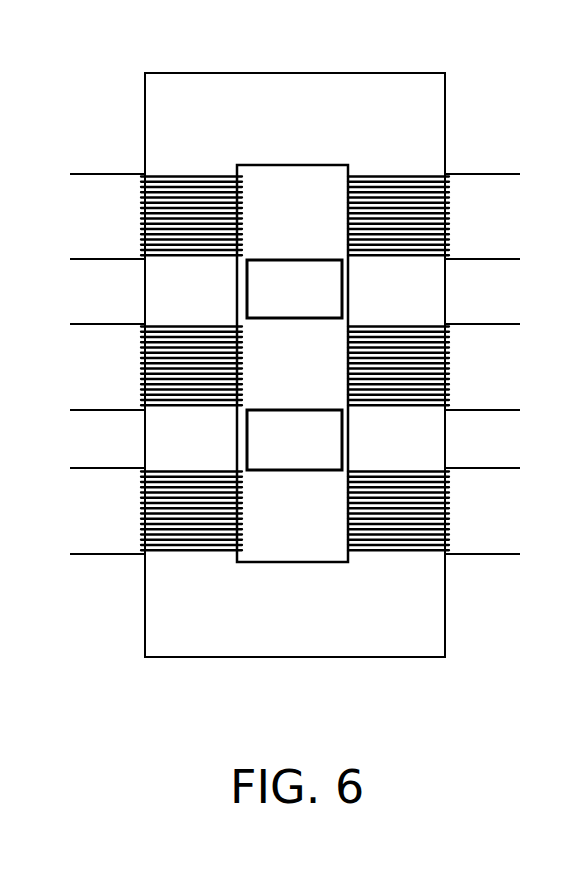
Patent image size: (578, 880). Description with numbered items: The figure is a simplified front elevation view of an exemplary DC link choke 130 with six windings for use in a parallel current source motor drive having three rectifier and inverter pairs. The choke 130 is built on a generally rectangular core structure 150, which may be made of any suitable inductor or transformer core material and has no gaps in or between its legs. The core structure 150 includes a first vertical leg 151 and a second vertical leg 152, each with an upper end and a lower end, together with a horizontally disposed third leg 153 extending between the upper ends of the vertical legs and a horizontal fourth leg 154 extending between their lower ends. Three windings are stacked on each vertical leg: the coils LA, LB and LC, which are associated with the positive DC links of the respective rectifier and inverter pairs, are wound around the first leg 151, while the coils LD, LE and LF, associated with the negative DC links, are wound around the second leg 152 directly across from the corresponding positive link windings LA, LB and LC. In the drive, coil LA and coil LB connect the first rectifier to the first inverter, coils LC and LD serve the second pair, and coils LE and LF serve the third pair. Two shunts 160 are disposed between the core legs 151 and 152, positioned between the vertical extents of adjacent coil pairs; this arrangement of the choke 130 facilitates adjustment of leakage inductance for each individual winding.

The DC choke 130 is at (104, 40).
The core structure 150 is at (145, 112).
The first vertical leg 151 is at (206, 305).
The second vertical leg 152 is at (411, 305).
The third leg 153 is at (308, 135).
The fourth leg 154 is at (309, 621).
The shunt 160 is at (308, 301).
The coil LA is at (118, 216).
The coil LB is at (118, 366).
The coil LC is at (118, 506).
The coil LD is at (478, 506).
The coil LE is at (478, 366).
The coil LF is at (478, 216).